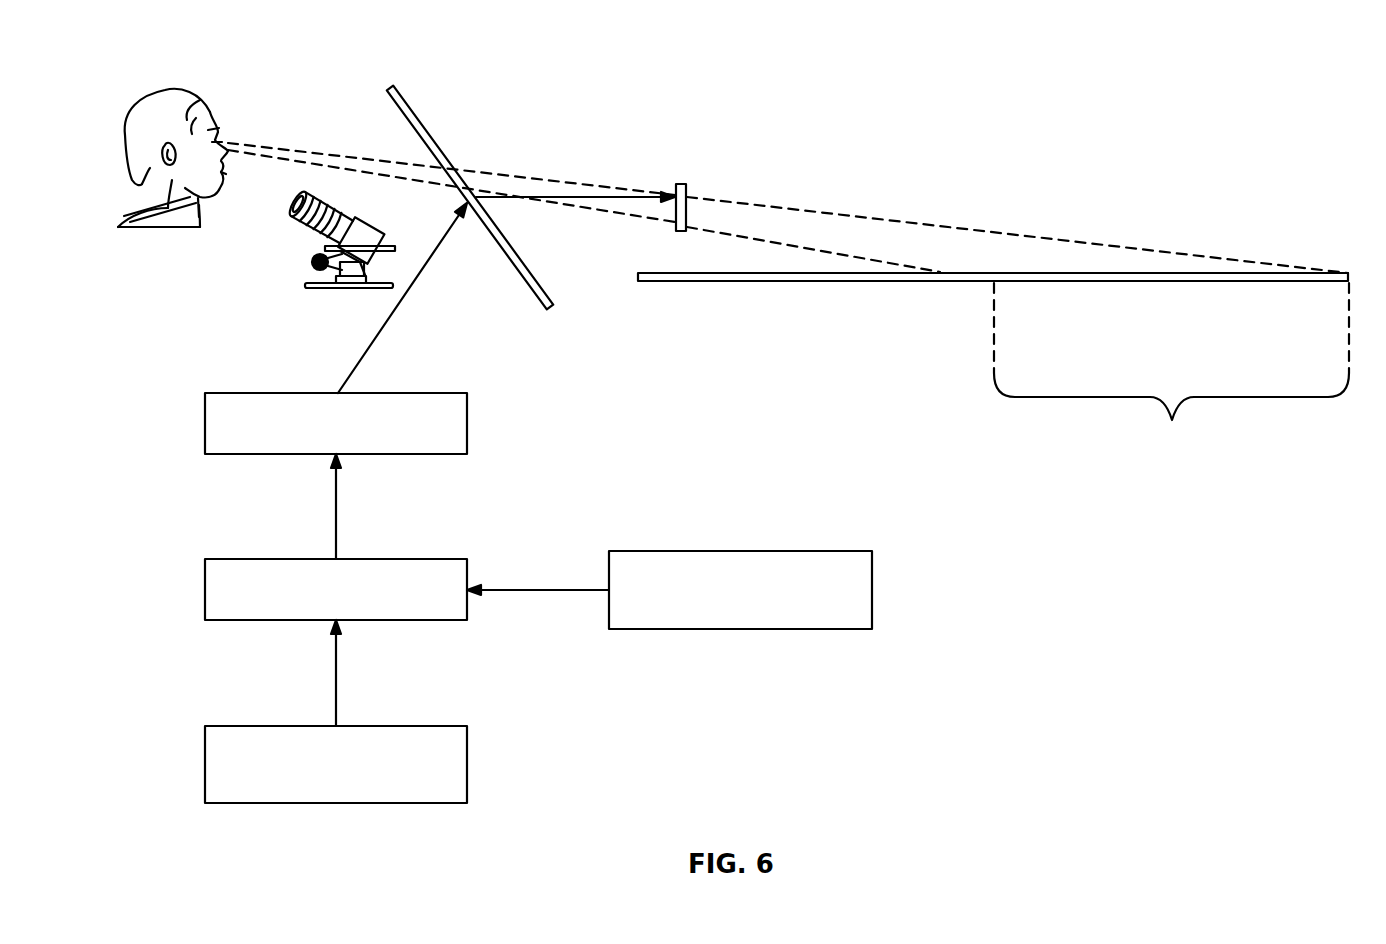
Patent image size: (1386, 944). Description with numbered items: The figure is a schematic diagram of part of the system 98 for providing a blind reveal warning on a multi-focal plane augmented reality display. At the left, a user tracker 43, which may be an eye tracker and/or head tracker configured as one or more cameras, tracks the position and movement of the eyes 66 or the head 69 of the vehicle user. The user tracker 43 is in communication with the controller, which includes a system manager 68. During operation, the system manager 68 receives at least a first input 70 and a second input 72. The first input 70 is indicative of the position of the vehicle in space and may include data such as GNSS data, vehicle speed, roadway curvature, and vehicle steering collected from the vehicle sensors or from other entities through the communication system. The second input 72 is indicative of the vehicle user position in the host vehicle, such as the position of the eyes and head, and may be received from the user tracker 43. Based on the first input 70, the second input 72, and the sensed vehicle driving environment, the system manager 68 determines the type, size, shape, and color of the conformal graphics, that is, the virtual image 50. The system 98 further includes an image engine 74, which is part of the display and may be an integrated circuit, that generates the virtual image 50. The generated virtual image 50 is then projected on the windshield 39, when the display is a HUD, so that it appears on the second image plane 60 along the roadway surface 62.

The system 98 is at (1080, 77).
The head 69 is at (172, 88).
The eyes 66 is at (228, 178).
The user tracker 43 is at (303, 283).
The windshield 39 is at (398, 95).
The virtual image 50 is at (681, 183).
The roadway surface 62 is at (850, 283).
The second image plane 60 is at (1171, 369).
The image engine 74 is at (472, 422).
The system manager 68 is at (470, 573).
The first input 70 is at (470, 765).
The second input 72 is at (874, 590).